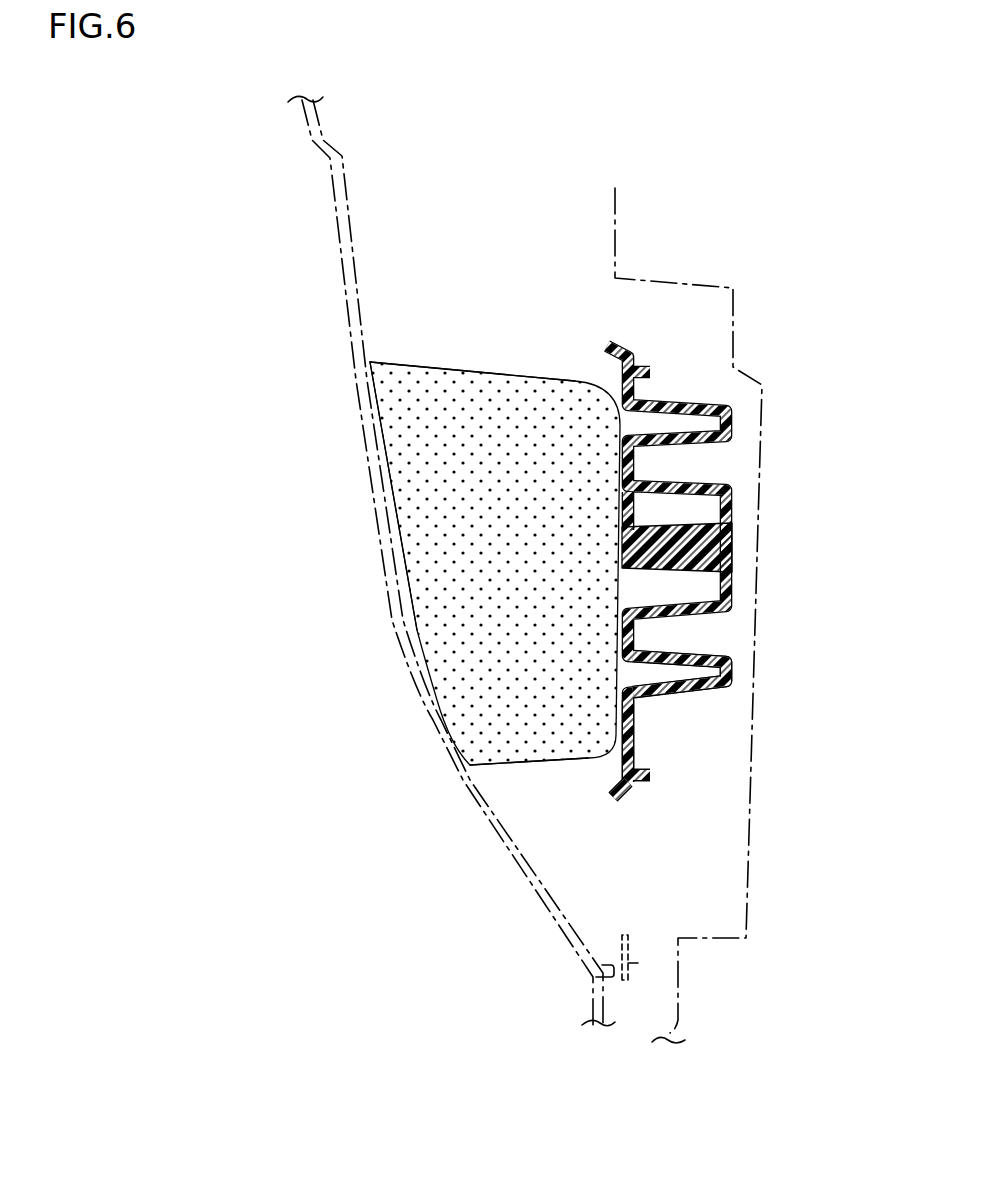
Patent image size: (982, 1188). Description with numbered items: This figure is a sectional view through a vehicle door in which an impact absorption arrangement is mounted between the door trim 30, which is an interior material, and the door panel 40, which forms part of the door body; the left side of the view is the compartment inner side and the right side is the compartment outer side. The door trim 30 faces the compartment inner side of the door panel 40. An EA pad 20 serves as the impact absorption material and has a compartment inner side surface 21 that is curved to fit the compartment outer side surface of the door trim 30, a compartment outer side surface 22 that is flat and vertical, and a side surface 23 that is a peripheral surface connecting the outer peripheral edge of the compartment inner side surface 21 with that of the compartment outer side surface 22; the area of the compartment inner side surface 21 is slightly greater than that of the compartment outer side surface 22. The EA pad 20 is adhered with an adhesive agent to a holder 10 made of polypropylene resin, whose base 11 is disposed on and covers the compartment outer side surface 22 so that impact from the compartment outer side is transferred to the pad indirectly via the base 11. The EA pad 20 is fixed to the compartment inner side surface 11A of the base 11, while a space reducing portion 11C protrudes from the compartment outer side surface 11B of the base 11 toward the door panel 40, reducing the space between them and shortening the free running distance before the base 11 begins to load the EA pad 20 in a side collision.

The holder 10 is at (718, 600).
The base 11 is at (630, 725).
The compartment inner side surface 11A is at (628, 768).
The compartment outer side surface 11B is at (632, 762).
The space reducing portion 11C is at (727, 667).
The EA pad 20 is at (475, 532).
The compartment inner side surface 21 is at (402, 567).
The compartment outer side surface 22 is at (620, 583).
The side surface 23 is at (502, 373).
The door trim 30 is at (342, 172).
The door panel 40 is at (757, 760).